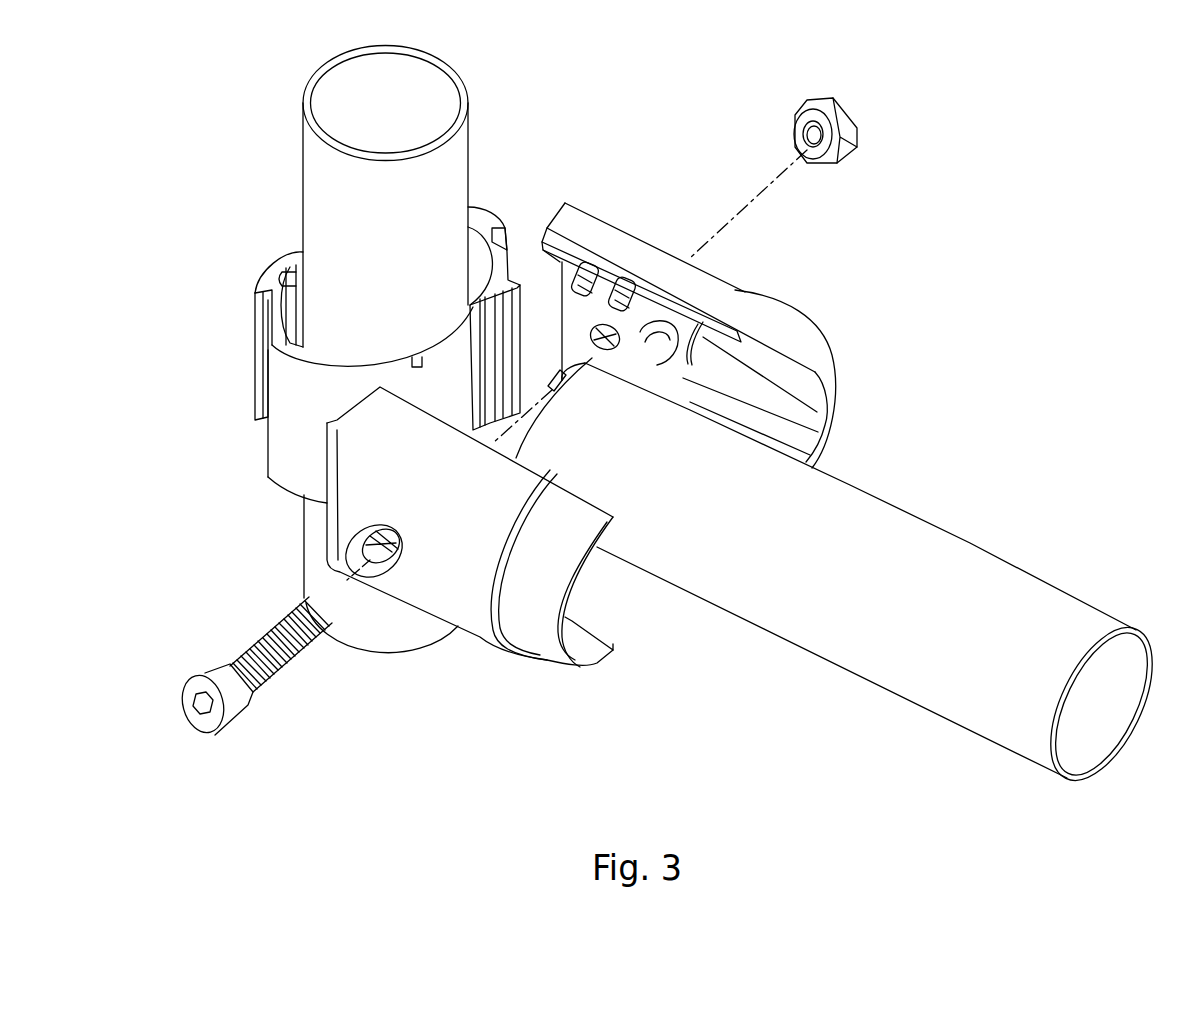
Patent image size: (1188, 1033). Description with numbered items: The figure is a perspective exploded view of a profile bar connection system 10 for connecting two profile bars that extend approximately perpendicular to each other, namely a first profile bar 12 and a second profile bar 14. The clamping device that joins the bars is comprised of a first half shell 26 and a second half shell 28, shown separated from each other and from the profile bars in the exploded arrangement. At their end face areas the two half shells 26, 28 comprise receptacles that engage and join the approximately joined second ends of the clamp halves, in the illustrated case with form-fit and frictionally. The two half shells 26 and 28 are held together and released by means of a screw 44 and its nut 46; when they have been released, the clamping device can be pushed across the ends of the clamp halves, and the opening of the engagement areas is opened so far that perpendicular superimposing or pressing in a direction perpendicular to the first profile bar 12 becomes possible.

The profile bar connection system 10 is at (632, 147).
The first profile bar 12 is at (447, 177).
The second profile bar 14 is at (957, 573).
The first half shell 26 is at (717, 287).
The second half shell 28 is at (447, 577).
The screw 44 is at (278, 667).
The nut 46 is at (837, 117).